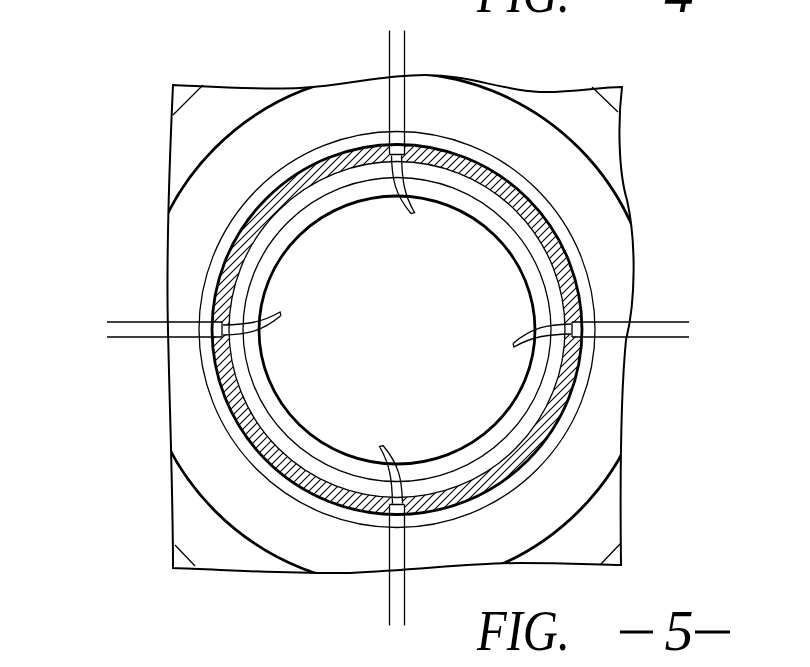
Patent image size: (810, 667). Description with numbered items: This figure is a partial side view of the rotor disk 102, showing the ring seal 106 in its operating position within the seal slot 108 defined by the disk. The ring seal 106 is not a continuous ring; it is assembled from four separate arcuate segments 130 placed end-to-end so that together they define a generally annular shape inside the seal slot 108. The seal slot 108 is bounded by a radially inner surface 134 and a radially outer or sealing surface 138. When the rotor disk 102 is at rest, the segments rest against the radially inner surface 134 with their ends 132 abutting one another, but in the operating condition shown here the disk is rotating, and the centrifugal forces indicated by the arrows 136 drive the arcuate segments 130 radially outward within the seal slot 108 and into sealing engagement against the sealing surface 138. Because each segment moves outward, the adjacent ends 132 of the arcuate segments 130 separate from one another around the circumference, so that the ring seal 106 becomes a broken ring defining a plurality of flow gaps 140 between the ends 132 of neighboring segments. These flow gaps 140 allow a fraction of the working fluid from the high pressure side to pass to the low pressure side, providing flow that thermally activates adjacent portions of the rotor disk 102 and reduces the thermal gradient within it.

The rotor disk 102 is at (130, 72).
The ring seal 106 is at (560, 254).
The seal slot 108 is at (298, 180).
The arcuate segments 130 is at (545, 220).
The ends 132 is at (397, 330).
The radially inner surface 134 is at (550, 288).
The arrows 136 is at (452, 388).
The sealing surface 138 is at (472, 160).
The flow gaps 140 is at (405, 331).